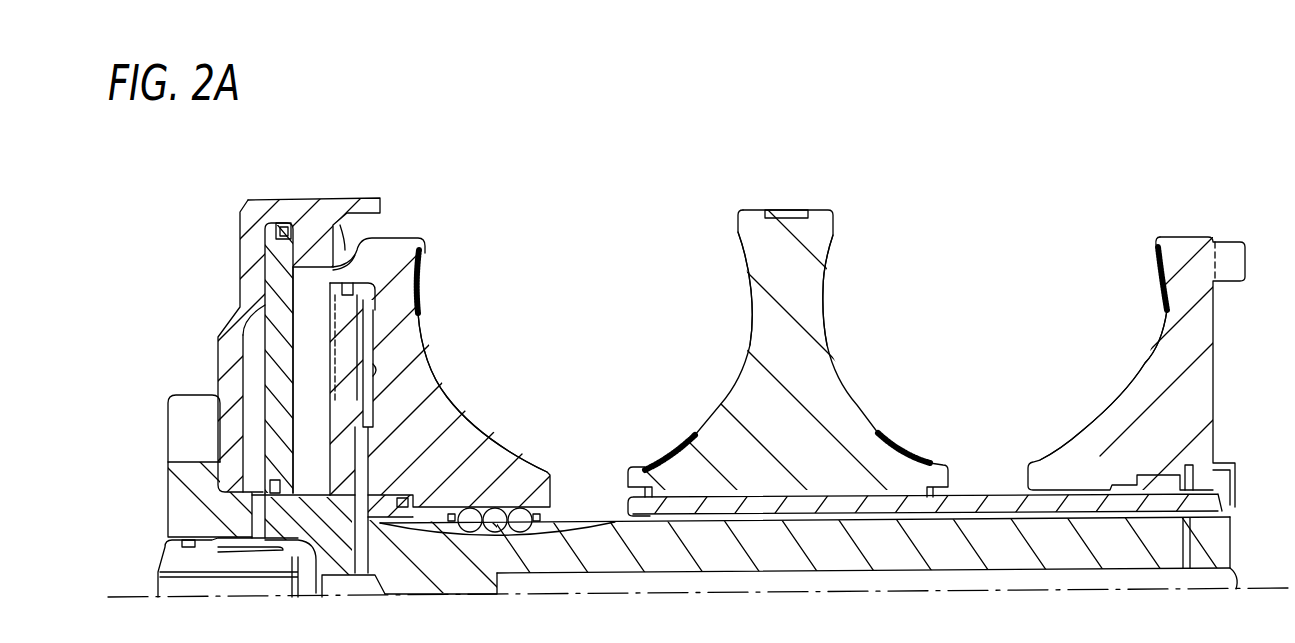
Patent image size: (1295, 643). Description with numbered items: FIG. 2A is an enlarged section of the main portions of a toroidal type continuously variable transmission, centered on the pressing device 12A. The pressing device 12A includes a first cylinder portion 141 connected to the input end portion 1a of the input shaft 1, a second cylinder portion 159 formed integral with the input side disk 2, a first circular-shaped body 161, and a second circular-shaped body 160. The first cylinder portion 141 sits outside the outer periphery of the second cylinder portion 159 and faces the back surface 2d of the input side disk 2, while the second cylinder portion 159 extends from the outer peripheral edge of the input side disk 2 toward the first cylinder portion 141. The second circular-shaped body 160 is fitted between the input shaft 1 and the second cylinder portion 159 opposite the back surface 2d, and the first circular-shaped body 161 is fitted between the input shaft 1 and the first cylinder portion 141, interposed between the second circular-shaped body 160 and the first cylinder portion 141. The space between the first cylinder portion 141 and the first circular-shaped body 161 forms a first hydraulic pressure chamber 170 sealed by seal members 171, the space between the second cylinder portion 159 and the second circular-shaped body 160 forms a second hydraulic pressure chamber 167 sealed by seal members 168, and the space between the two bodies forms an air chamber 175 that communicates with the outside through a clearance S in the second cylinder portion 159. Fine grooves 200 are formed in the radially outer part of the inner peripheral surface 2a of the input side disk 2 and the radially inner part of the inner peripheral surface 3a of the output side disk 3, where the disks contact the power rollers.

The input shaft 1 is at (413, 578).
The input end portion 1a is at (227, 520).
The input side disk 2 is at (1197, 342).
The inner peripheral surface 2a is at (515, 460).
The back surface 2d is at (375, 370).
The output side disk 3 is at (808, 272).
The inner peripheral surface 3a is at (748, 327).
The pressing device 12A is at (365, 188).
The first cylinder portion 141 is at (240, 313).
The second cylinder portion 159 is at (350, 243).
The second circular-shaped body 160 is at (418, 400).
The first circular-shaped body 161 is at (267, 260).
The second hydraulic pressure chamber 167 is at (367, 293).
The seal members 168 is at (337, 270).
The first hydraulic pressure chamber 170 is at (253, 357).
The seal members 171 is at (285, 222).
The air chamber 175 is at (378, 308).
The fine grooves 200 is at (421, 306).
The clearance S is at (297, 268).